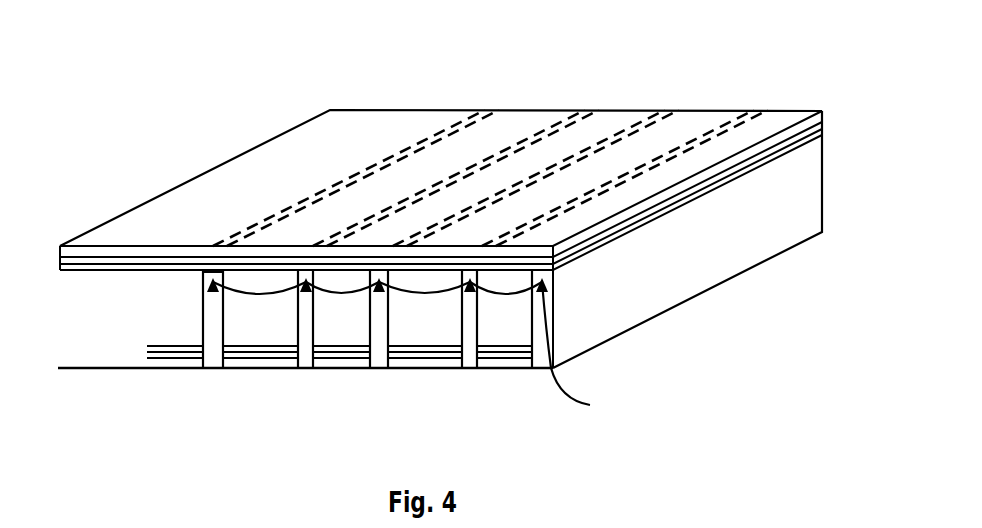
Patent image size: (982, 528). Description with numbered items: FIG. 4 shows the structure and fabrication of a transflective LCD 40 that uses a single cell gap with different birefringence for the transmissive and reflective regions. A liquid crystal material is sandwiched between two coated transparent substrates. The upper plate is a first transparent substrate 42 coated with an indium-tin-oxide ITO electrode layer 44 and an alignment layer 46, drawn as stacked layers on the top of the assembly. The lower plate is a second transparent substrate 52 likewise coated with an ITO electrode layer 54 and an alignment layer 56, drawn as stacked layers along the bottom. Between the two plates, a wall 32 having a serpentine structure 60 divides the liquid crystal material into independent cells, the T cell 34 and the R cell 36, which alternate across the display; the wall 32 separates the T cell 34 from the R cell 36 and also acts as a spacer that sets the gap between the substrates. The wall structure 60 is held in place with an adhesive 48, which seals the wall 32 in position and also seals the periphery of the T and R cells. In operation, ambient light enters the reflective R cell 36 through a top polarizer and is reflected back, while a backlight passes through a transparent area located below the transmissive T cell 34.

The transflective LCD 40 is at (549, 92).
The first transparent substrate 42 is at (788, 150).
The ITO electrode layer 44 is at (712, 180).
The alignment layer 46 is at (635, 222).
The adhesive 48 is at (208, 270).
The wall 32 is at (208, 311).
The T cell 34 is at (337, 335).
The R cell 36 is at (438, 332).
The second transparent substrate 52 is at (233, 363).
The ITO electrode layer 54 is at (315, 360).
The alignment layer 56 is at (410, 361).
The serpentine wall structure 60 is at (419, 351).